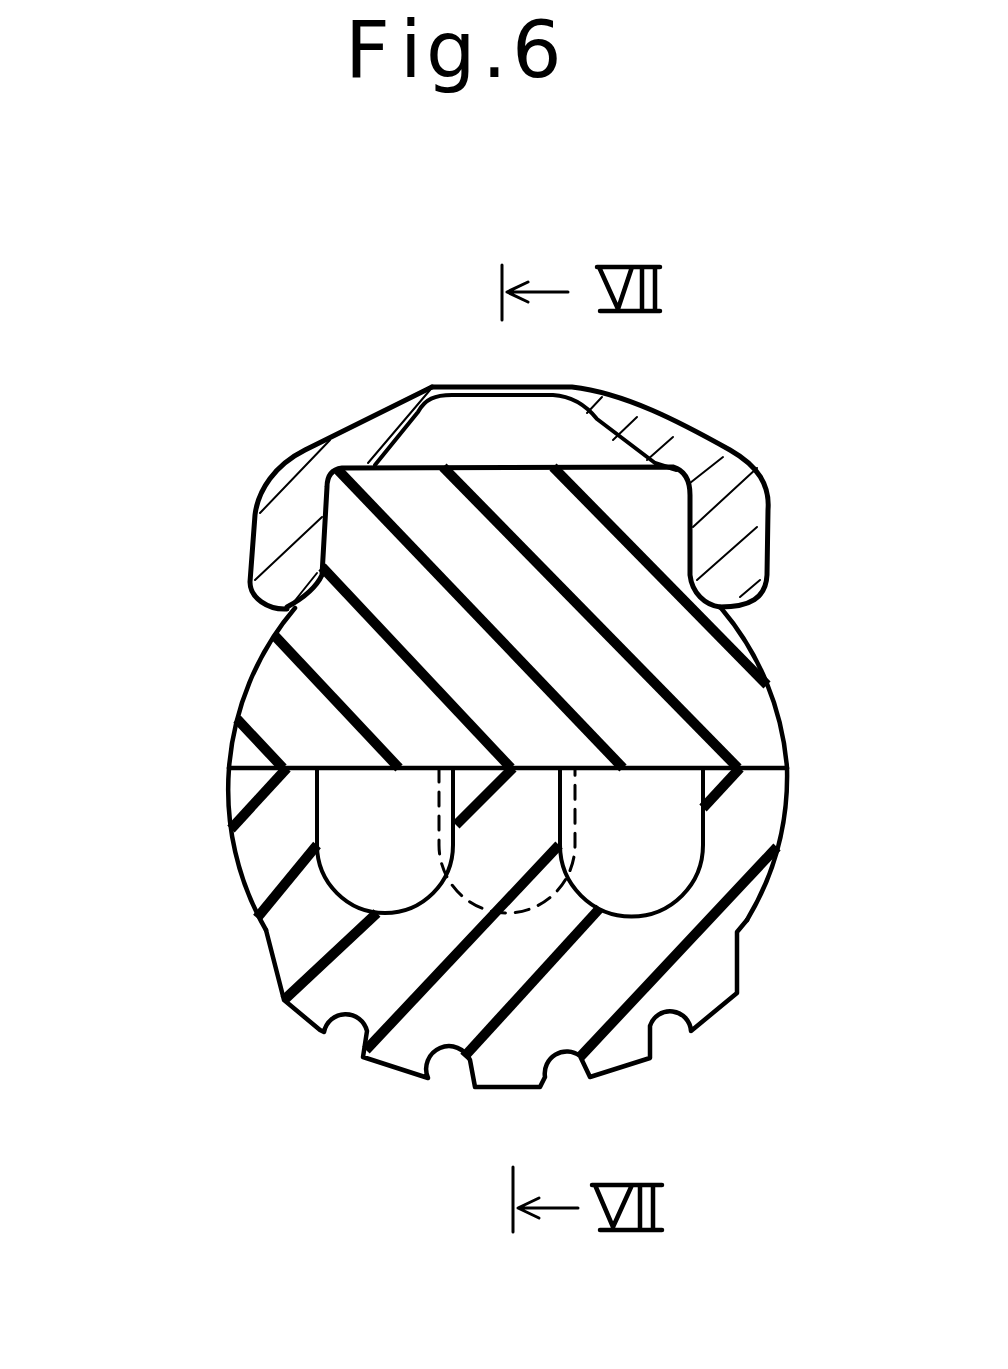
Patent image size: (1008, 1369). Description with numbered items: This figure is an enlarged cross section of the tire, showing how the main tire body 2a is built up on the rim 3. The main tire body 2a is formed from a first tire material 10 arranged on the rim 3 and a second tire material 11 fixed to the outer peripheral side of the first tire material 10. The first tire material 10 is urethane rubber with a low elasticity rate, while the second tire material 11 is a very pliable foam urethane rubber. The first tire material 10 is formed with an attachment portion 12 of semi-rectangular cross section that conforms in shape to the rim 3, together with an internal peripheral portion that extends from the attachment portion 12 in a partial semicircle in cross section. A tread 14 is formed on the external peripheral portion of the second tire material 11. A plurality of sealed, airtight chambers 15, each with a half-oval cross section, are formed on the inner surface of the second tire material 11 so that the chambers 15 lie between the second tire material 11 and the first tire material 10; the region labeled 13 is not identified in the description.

The main tire body 2a is at (127, 695).
The first tire material 10 is at (237, 720).
The second tire material 11 is at (265, 872).
The hatched core block 13 is at (718, 678).
The tread 14 is at (637, 1063).
The sealed airtight chambers 15 is at (677, 837).
The rim 3 is at (263, 538).
The attachment portion 12 is at (660, 518).